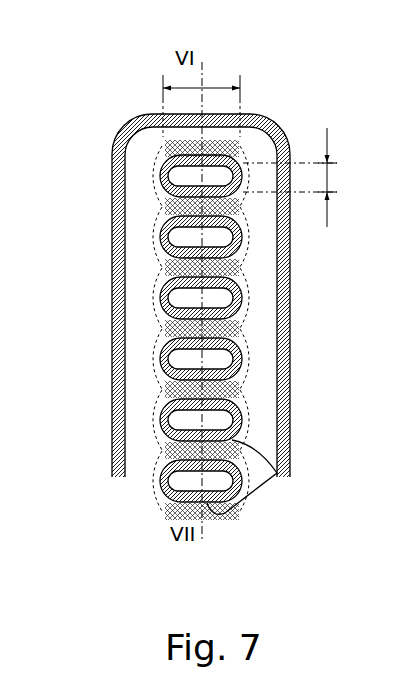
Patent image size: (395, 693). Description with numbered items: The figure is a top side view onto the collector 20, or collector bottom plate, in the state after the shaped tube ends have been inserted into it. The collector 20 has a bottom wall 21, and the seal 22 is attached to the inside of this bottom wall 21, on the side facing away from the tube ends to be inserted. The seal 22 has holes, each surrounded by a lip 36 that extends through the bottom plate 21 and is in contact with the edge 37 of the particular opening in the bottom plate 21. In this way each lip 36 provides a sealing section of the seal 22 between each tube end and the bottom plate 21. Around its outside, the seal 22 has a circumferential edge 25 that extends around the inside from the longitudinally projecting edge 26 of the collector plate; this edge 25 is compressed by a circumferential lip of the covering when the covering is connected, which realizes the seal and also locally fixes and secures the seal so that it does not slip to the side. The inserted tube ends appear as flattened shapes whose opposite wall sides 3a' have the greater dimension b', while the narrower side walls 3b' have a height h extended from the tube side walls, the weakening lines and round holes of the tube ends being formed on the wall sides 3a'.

The collector 20 is at (212, 269).
The bottom wall 21 is at (272, 115).
The seal 22 is at (263, 257).
The circumferential edge 25 is at (131, 123).
The longitudinally projecting edge 26 is at (112, 183).
The lip 36 is at (165, 290).
The edge 37 is at (162, 333).
The side wall 3b' is at (204, 420).
The wall side 3a' is at (261, 477).
The dimension b' is at (201, 74).
The passage height dimension h is at (330, 133).